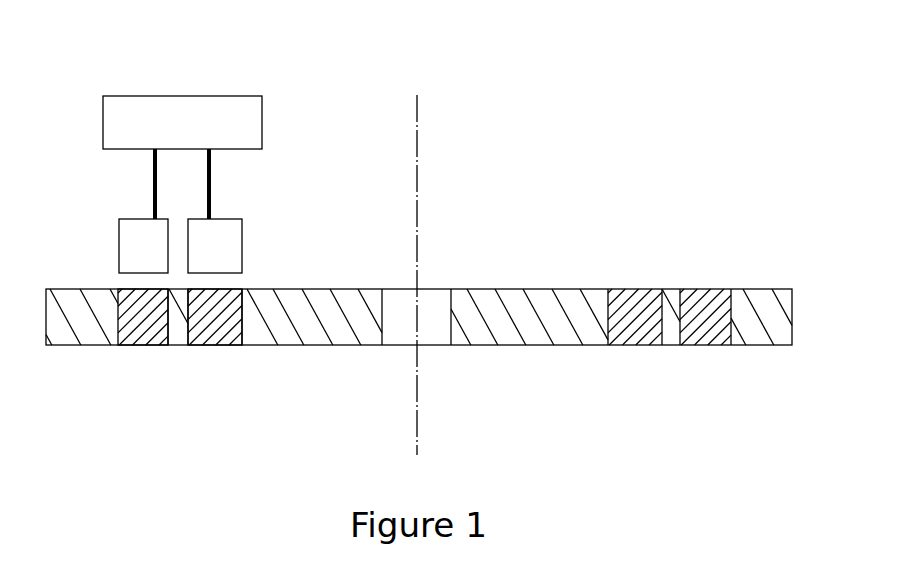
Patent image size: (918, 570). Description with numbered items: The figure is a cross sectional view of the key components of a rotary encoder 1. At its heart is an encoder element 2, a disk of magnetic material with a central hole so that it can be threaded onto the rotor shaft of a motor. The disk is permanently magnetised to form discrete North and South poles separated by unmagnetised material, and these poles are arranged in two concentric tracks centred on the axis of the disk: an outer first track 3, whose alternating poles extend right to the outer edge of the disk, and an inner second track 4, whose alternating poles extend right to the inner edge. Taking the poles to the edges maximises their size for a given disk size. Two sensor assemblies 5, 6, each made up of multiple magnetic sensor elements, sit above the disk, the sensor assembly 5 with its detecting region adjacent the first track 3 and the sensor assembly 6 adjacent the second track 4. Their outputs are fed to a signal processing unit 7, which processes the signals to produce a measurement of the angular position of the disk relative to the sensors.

The rotary encoder 1 is at (617, 165).
The encoder element 2 is at (570, 345).
The first track 3 is at (138, 338).
The second track 4 is at (218, 338).
The sensor assembly 5 is at (119, 240).
The sensor assembly 6 is at (243, 240).
The signal processing unit 7 is at (195, 96).